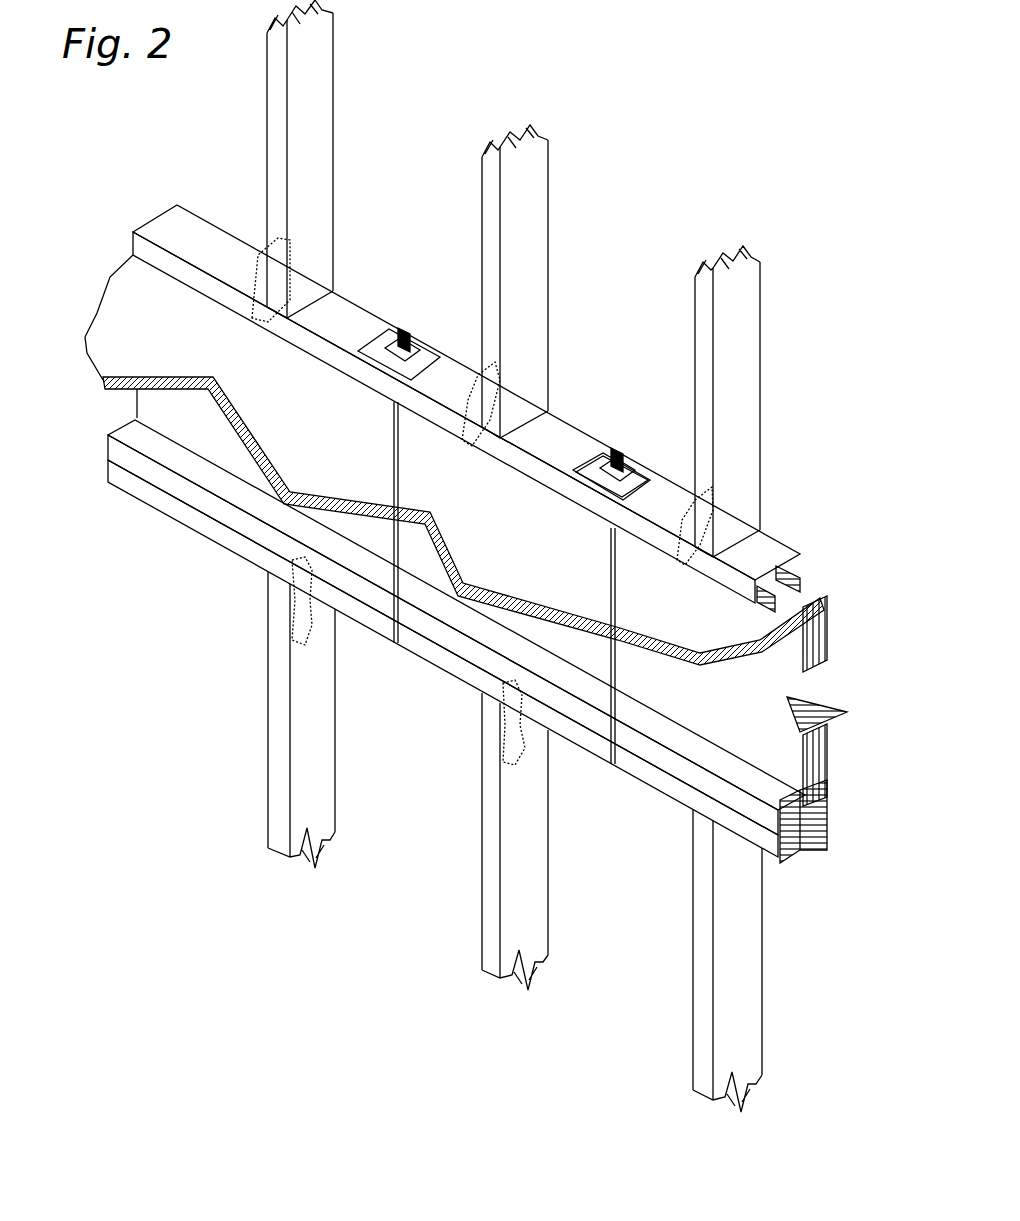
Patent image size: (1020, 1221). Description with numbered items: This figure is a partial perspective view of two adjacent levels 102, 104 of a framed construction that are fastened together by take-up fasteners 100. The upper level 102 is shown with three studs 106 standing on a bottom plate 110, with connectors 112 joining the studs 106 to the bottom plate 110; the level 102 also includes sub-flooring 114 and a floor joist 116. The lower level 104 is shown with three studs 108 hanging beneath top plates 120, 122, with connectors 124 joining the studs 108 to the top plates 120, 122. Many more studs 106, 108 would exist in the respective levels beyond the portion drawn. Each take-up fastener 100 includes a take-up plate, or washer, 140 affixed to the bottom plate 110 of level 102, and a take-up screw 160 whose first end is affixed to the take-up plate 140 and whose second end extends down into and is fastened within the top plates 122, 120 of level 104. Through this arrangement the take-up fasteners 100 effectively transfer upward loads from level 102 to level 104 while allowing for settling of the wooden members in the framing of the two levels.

The take-up fastener 100 is at (406, 306).
The level 102 is at (668, 135).
The level 104 is at (152, 626).
The stud 106 is at (330, 84).
The stud 108 is at (272, 787).
The bottom plate 110 is at (198, 218).
The connector 112 is at (258, 292).
The sub-flooring 114 is at (108, 284).
The floor joist 116 is at (818, 648).
The top plate 120 is at (108, 474).
The top plate 122 is at (108, 442).
The connector 124 is at (306, 622).
The take-up plate 140 is at (642, 462).
The take-up screw 160 is at (628, 677).